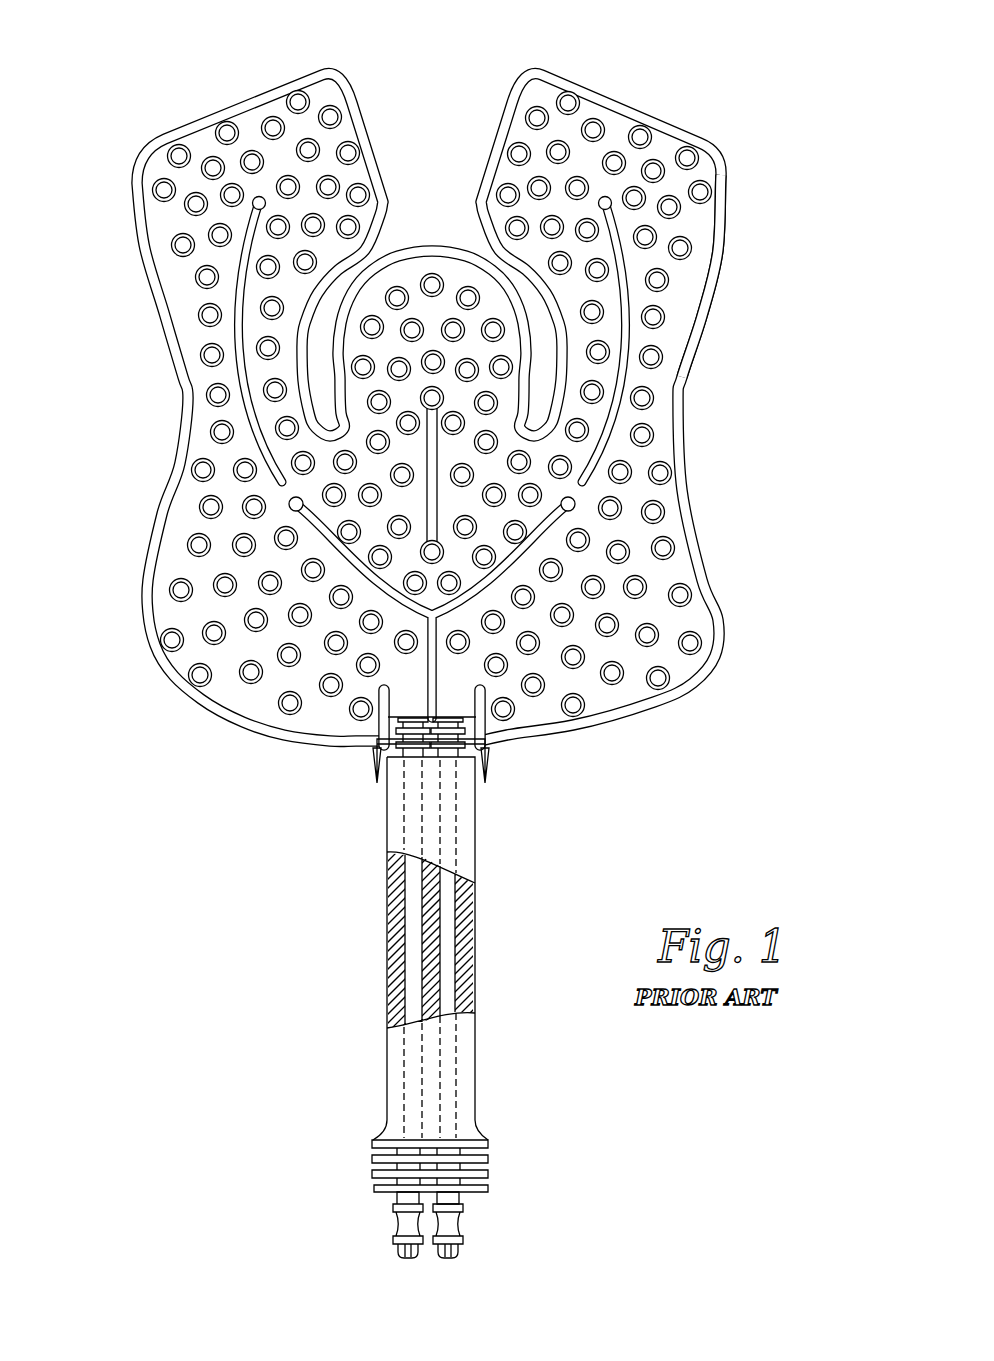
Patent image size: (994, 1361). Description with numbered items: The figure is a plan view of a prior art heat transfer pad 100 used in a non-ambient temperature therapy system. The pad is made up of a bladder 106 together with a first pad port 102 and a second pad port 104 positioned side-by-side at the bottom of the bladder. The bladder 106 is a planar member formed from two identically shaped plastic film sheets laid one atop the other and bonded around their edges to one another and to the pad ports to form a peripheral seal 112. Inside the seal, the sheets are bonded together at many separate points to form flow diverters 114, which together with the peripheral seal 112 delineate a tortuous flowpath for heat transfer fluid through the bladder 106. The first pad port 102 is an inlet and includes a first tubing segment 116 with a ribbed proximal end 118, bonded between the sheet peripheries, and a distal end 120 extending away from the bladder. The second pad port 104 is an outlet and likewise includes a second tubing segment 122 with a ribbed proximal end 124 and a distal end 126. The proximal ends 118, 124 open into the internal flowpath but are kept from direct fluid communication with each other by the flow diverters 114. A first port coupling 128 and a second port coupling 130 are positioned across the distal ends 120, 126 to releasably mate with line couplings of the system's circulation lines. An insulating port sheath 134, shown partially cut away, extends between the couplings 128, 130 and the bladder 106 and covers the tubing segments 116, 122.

The heat transfer pad 100 is at (427, 636).
The first pad port 102 is at (452, 757).
The second pad port 104 is at (405, 760).
The bladder 106 is at (198, 297).
The peripheral seal 112 is at (686, 424).
The flow diverters 114 is at (187, 213).
The first tubing segment 116 is at (447, 973).
The proximal end 118 is at (462, 728).
The distal end 120 is at (465, 1197).
The second tubing segment 122 is at (413, 985).
The proximal end 124 is at (376, 748).
The distal end 126 is at (395, 1198).
The first port coupling 128 is at (453, 1232).
The second port coupling 130 is at (403, 1227).
The insulating port sheath 134 is at (482, 1080).